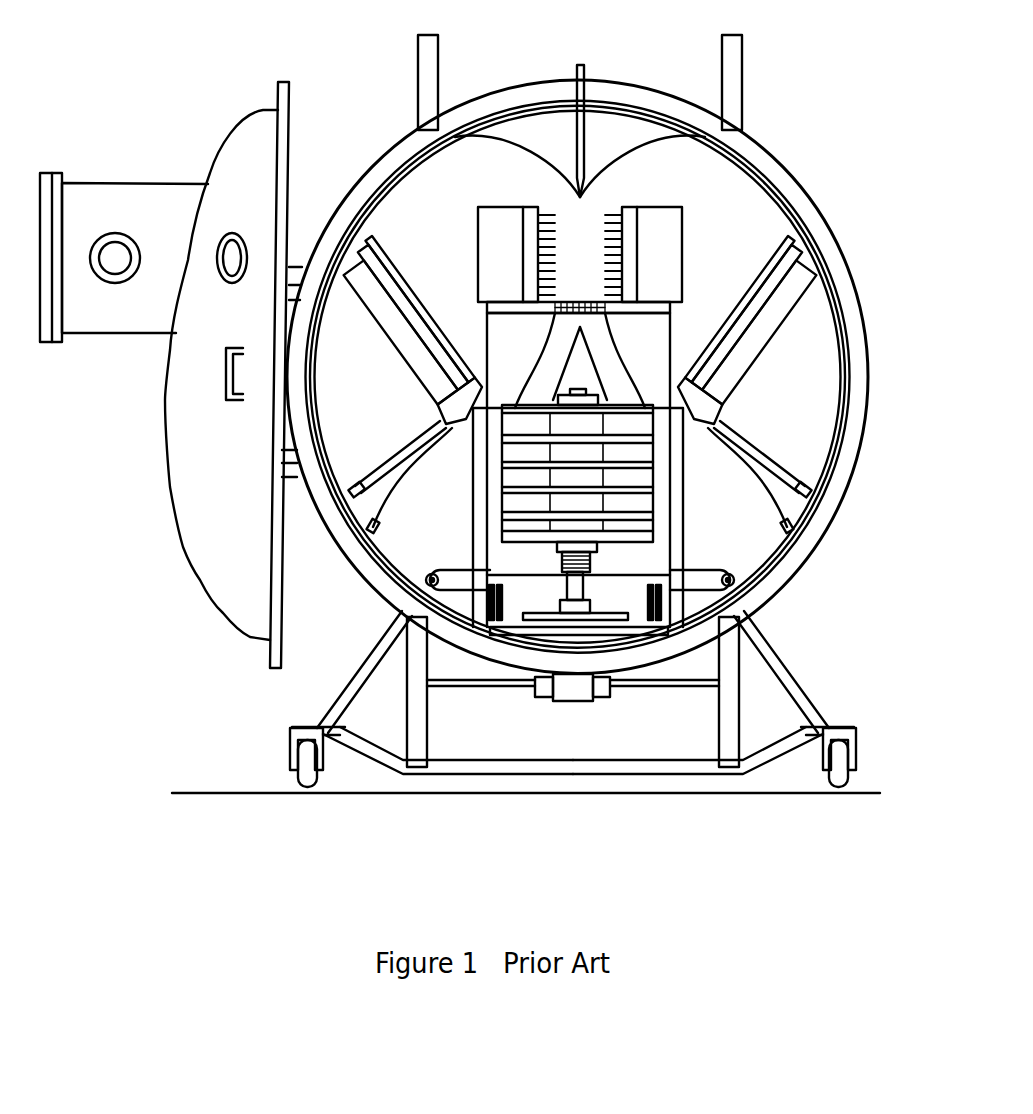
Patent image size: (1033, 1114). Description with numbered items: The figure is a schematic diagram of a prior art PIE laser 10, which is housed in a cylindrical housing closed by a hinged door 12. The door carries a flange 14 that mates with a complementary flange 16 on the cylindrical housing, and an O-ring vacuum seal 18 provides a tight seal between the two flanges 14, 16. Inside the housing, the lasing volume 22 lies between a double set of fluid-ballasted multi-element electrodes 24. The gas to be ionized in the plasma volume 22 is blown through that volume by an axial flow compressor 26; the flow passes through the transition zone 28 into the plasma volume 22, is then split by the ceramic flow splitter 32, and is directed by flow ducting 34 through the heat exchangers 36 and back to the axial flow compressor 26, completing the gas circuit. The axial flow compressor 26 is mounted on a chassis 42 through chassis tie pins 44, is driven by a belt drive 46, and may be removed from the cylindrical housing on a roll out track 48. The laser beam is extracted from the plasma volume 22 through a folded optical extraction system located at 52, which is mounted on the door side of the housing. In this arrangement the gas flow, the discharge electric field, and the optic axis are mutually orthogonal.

The PIE laser 10 is at (806, 152).
The hinged door 12 is at (233, 118).
The flange 14 is at (283, 78).
The complementary flange 16 is at (787, 600).
The O-ring vacuum seal 18 is at (797, 553).
The lasing volume 22 is at (580, 230).
The fluid-ballasted multi-element electrodes 24 is at (550, 205).
The axial flow compressor 26 is at (497, 517).
The transition zone 28 is at (628, 362).
The ceramic flow splitter 32 is at (590, 197).
The flow ducting 34 is at (645, 150).
The heat exchangers 36 is at (395, 262).
The chassis 42 is at (688, 500).
The chassis tie pins 44 is at (437, 561).
The belt drive 46 is at (596, 553).
The roll out track 48 is at (663, 636).
The folded optical extraction system 52 is at (115, 181).